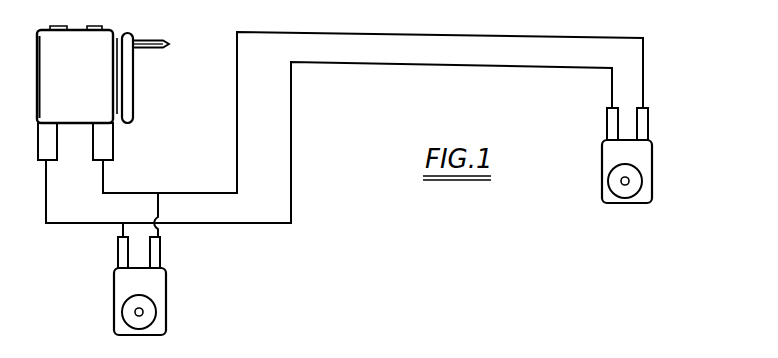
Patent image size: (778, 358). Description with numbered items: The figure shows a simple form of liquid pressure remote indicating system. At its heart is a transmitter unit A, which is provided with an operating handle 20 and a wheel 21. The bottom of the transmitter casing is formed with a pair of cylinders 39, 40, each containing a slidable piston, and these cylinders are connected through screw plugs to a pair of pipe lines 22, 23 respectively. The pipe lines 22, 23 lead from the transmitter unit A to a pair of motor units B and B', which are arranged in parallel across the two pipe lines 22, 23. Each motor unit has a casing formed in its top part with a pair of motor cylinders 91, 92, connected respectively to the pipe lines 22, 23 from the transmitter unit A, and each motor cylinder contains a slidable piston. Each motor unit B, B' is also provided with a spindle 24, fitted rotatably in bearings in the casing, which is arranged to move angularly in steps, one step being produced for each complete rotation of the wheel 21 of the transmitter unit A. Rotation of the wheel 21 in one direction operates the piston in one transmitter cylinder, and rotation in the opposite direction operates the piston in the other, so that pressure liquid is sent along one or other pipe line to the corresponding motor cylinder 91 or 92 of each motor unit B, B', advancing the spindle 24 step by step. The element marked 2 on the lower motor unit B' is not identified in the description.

The transmitter unit A is at (72, 40).
The operating handle 20 is at (165, 44).
The wheel 21 is at (127, 103).
The cylinder 39 is at (50, 150).
The cylinder 40 is at (115, 152).
The pipe line 22 is at (388, 64).
The pipe line 23 is at (353, 33).
The motor cylinder 91 is at (118, 254).
The motor cylinder 92 is at (160, 254).
The motor unit B' is at (155, 301).
The battery cell 2 is at (143, 314).
The motor unit B is at (609, 171).
The spindle 24 is at (625, 186).